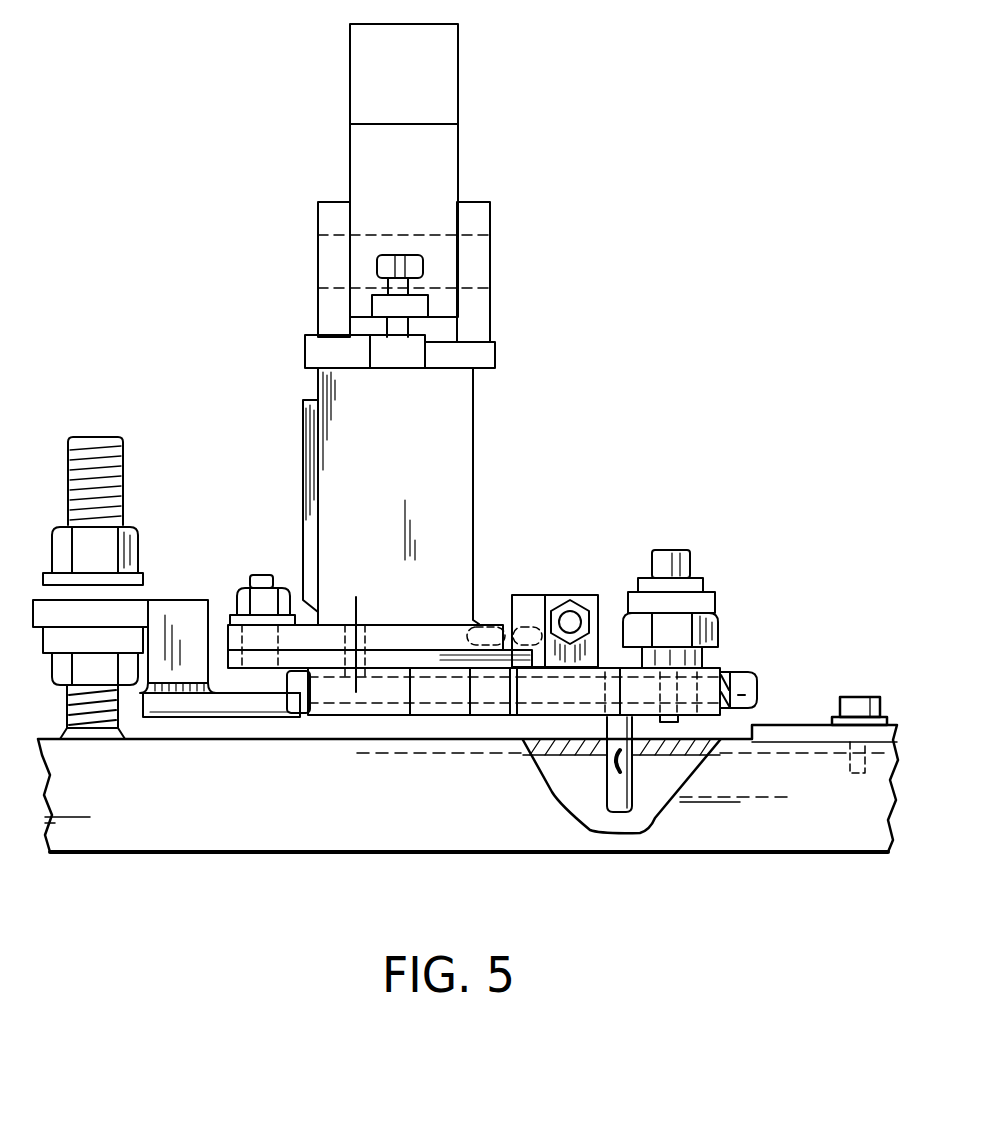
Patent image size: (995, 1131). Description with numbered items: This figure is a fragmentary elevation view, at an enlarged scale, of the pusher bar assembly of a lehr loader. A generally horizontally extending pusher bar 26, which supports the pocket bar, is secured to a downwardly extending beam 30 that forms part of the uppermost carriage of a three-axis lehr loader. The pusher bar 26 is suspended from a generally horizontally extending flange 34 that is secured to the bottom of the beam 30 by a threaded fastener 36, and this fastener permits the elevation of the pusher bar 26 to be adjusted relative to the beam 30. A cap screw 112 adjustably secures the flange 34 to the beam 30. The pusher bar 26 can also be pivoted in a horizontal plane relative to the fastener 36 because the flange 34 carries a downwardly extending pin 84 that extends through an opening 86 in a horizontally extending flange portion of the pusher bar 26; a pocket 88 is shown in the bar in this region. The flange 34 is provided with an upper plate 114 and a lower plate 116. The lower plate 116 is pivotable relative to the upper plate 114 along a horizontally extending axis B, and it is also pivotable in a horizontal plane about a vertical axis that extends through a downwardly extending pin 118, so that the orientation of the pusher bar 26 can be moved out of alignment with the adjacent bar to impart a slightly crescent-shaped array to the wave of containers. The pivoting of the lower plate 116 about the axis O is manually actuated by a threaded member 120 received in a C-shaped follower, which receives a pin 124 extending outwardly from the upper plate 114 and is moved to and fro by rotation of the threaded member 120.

The pusher bar 26 is at (223, 797).
The beam 30 is at (408, 429).
The flange 34 is at (430, 702).
The threaded fastener 36 is at (97, 433).
The pin 84 is at (627, 795).
The opening 86 is at (622, 770).
The pocket 88 is at (580, 758).
The cap screw 112 is at (675, 550).
The upper plate 114 is at (470, 680).
The lower plate 116 is at (327, 708).
The pin 118 is at (487, 630).
The threaded member 120 is at (570, 603).
The pin 124 is at (345, 637).
The axis O is at (343, 643).
The horizontally extending axis B is at (760, 687).